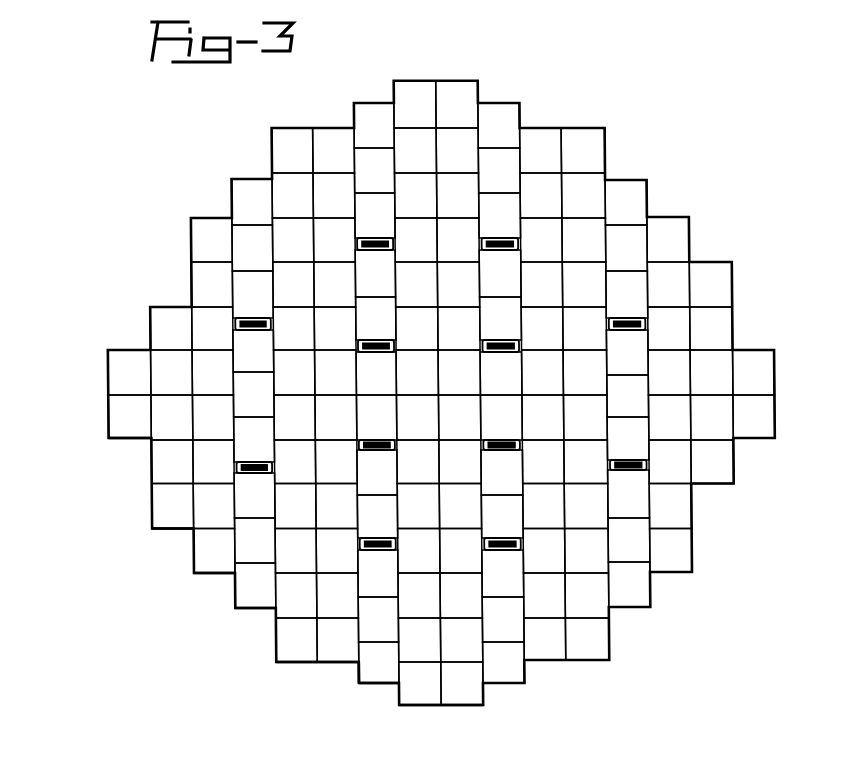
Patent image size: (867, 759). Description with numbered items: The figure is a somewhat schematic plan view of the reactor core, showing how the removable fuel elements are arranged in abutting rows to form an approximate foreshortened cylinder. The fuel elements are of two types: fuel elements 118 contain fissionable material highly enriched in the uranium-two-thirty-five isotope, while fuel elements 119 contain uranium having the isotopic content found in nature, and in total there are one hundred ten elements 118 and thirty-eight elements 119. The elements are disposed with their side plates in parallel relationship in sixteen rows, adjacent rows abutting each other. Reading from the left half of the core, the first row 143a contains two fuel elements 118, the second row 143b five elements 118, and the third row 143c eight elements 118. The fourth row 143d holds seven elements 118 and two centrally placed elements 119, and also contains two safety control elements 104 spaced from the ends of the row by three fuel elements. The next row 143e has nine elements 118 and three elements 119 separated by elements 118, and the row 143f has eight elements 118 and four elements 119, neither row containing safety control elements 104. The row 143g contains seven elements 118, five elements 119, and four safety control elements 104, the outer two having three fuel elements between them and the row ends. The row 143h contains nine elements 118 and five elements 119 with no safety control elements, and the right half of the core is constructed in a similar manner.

The fuel element 118 is at (442, 393).
The fuel element 119 is at (440, 395).
The safety control element 104 is at (476, 542).
The first row 143a is at (137, 441).
The second row 143b is at (181, 531).
The third row 143c is at (217, 577).
The fourth row 143d is at (262, 612).
The fifth row 143e is at (304, 667).
The sixth row 143f is at (352, 670).
The seventh row 143g is at (383, 695).
The eighth row 143h is at (438, 709).